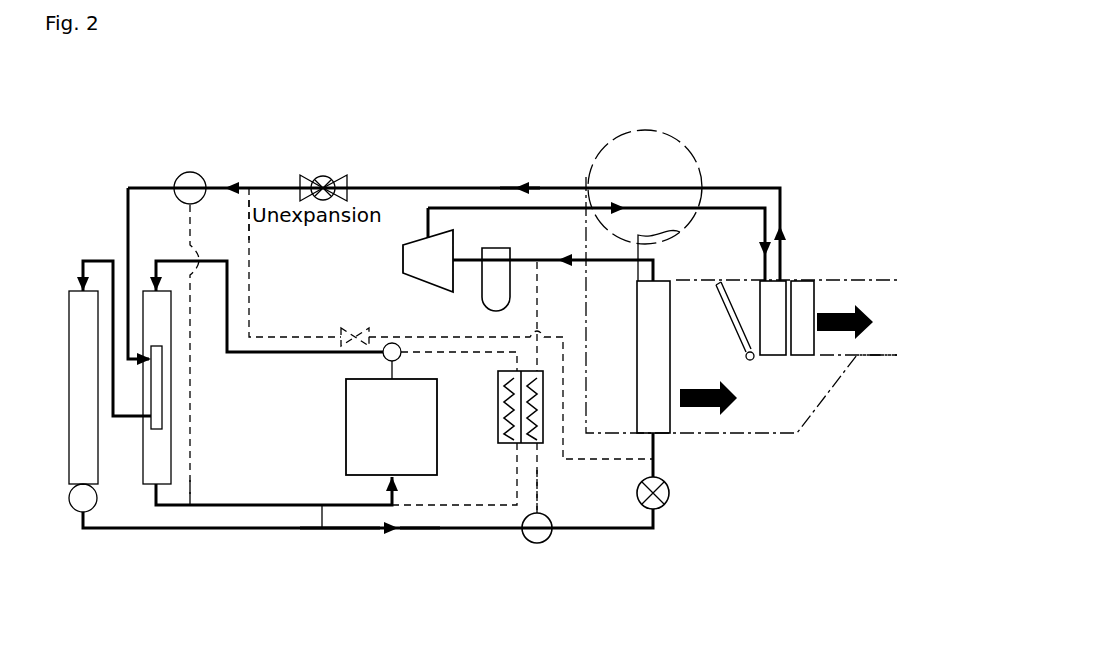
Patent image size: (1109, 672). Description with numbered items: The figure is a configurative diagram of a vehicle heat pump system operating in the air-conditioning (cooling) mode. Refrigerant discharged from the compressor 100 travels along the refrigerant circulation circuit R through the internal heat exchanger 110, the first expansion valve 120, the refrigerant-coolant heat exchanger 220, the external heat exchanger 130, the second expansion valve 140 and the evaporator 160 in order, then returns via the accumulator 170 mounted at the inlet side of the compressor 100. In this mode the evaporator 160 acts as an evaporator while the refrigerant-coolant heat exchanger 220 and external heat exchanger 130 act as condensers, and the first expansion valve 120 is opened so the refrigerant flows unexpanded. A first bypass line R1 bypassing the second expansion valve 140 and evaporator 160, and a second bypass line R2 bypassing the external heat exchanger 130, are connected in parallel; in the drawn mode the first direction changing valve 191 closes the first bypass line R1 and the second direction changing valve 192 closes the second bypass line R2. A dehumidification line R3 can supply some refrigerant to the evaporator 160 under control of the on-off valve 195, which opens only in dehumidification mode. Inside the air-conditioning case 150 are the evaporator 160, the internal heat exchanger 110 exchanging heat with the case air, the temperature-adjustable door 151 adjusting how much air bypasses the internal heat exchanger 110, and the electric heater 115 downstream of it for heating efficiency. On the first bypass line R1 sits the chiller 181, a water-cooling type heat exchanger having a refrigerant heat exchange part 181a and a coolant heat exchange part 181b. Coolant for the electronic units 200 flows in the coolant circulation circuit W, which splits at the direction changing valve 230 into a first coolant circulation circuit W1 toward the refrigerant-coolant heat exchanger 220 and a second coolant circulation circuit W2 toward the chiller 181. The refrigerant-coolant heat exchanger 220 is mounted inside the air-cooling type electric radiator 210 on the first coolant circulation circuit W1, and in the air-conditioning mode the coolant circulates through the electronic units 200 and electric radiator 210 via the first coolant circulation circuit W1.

The compressor 100 is at (403, 262).
The internal heat exchanger 110 is at (777, 357).
The electric heater 115 is at (797, 357).
The first expansion valve 120 is at (327, 170).
The external heat exchanger 130 is at (70, 484).
The second expansion valve 140 is at (670, 496).
The air-conditioning case 150 is at (857, 357).
The temperature-adjustable door 151 is at (738, 325).
The evaporator 160 is at (670, 422).
The accumulator 170 is at (492, 248).
The chiller 181 is at (487, 582).
The refrigerant heat exchange part 181a is at (528, 445).
The coolant heat exchange part 181b is at (507, 445).
The first direction changing valve 191 is at (537, 545).
The second direction changing valve 192 is at (190, 172).
The on-off valve 195 is at (346, 335).
The electronic units 200 is at (391, 427).
The electric radiator 210 is at (143, 486).
The refrigerant-coolant heat exchanger 220 is at (162, 388).
The direction changing valve 230 is at (384, 357).
The refrigerant circulation circuit R is at (524, 178).
The first bypass line R1 is at (540, 492).
The second bypass line R2 is at (190, 482).
The dehumidification line R3 is at (247, 240).
The coolant circulation circuit W is at (372, 600).
The first coolant circulation circuit W1 is at (322, 530).
The second coolant circulation circuit W2 is at (418, 507).